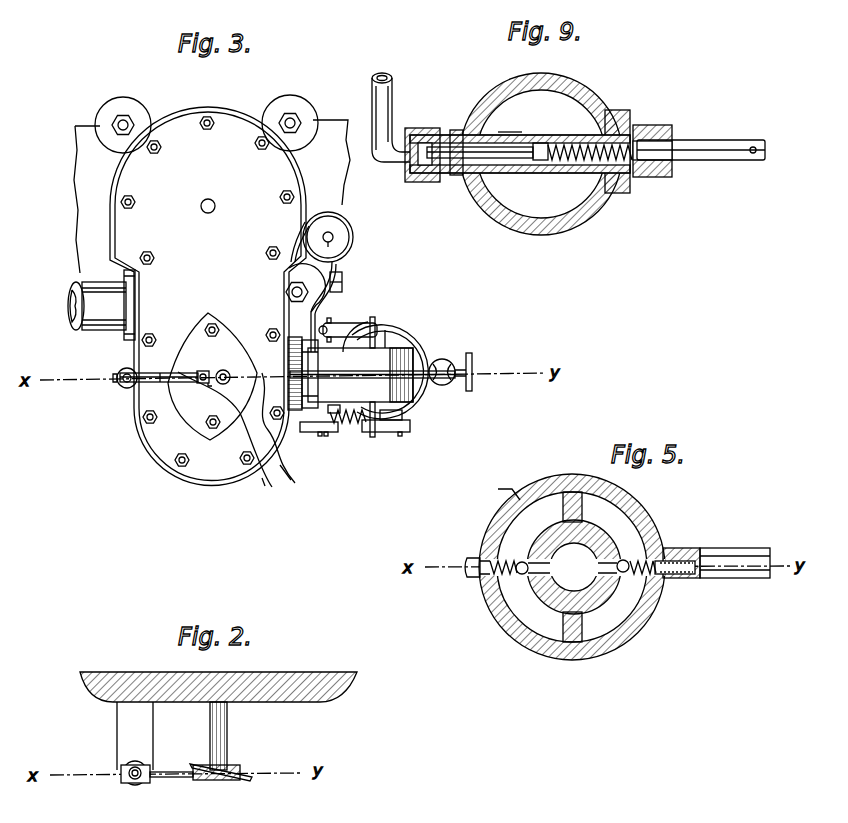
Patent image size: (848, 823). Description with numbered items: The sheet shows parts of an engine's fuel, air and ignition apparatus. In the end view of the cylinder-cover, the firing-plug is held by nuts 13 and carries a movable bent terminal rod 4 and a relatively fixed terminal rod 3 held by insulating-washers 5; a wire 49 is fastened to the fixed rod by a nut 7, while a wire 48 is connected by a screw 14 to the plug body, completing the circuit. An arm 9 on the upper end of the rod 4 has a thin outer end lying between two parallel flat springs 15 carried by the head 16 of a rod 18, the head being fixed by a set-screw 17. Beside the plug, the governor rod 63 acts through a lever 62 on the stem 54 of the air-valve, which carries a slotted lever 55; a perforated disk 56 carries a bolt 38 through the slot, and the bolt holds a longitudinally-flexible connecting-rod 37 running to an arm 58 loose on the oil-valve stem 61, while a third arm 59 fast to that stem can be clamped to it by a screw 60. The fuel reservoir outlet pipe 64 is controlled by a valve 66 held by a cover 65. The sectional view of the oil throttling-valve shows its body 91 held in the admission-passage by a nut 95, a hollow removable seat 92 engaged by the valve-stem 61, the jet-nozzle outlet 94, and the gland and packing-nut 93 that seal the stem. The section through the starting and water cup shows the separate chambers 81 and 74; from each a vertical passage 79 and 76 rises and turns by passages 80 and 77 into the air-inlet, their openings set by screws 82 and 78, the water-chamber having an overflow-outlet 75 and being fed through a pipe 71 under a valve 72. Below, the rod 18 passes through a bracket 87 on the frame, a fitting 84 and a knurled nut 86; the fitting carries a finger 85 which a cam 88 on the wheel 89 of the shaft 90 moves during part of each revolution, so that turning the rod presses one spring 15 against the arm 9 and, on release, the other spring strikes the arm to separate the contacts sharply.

In FIG. 3, the fixed terminal rod 3 is at (222, 384).
In FIG. 3, the movable bent terminal rod 4 is at (200, 384).
In FIG. 3, the insulating-washers 5 is at (208, 386).
In FIG. 3, the nut 7 is at (226, 373).
In FIG. 3, the arm 9 is at (178, 371).
In FIG. 3, the nuts 13 is at (215, 325).
In FIG. 3, the screw 14 is at (262, 372).
In FIG. 3, the parallel flat springs 15 is at (160, 374).
In FIG. 3, the head 16 is at (121, 371).
In FIG. 3, the set-screw 17 is at (115, 381).
In FIG. 3, the rod 18 is at (125, 388).
In FIG. 3, the longitudinally-flexible connecting-rod 37 is at (350, 424).
In FIG. 3, the bolt 38 is at (405, 430).
In FIG. 3, the wire 48 is at (292, 480).
In FIG. 3, the wire 49 is at (262, 488).
In FIG. 3, the stem of the air-valve 54 is at (375, 322).
In FIG. 3, the lever 55 is at (385, 433).
In FIG. 3, the perforated disk 56 is at (400, 434).
In FIG. 3, the arm 58 is at (332, 433).
In FIG. 3, the third arm 59 is at (327, 437).
In FIG. 3, the screw 60 is at (320, 437).
In FIG. 3, the valve-stem 61 is at (305, 433).
In FIG. 9, the valve-stem 61 is at (722, 145).
In FIG. 3, the lever 62 is at (350, 324).
In FIG. 3, the rod 63 is at (330, 320).
In FIG. 3, the pipe 64 is at (342, 281).
In FIG. 9, the pipe 64 is at (392, 106).
In FIG. 3, the cover 65 is at (323, 230).
In FIG. 3, the valve 66 is at (333, 251).
In FIG. 3, the pipe 71 is at (342, 379).
In FIG. 3, the valve 72 is at (443, 359).
In FIG. 3, the water-cup chamber 74 is at (388, 340).
In FIG. 5, the water-cup chamber 74 is at (592, 567).
In FIG. 5, the overflow-outlet 75 is at (735, 555).
In FIG. 5, the vertical passage 76 is at (625, 560).
In FIG. 5, the passage 77 is at (622, 574).
In FIG. 5, the screw 78 is at (665, 548).
In FIG. 5, the vertical passage 79 is at (520, 562).
In FIG. 5, the passage 80 is at (530, 573).
In FIG. 3, the starting-cup chamber 81 is at (355, 326).
In FIG. 5, the starting-cup chamber 81 is at (538, 565).
In FIG. 5, the screw 82 is at (470, 577).
In FIG. 2, the fitting 84 is at (142, 783).
In FIG. 2, the finger 85 is at (171, 783).
In FIG. 2, the knurled nut 86 is at (128, 780).
In FIG. 2, the bracket 87 is at (135, 736).
In FIG. 2, the cam 88 is at (238, 775).
In FIG. 2, the wheel 89 is at (204, 781).
In FIG. 2, the shaft 90 is at (227, 721).
In FIG. 9, the body 91 is at (565, 164).
In FIG. 9, the hollow removable seat 92 is at (493, 165).
In FIG. 9, the gland and packing-nut 93 is at (655, 128).
In FIG. 9, the outlet 94 is at (538, 143).
In FIG. 9, the nut 95 is at (458, 178).